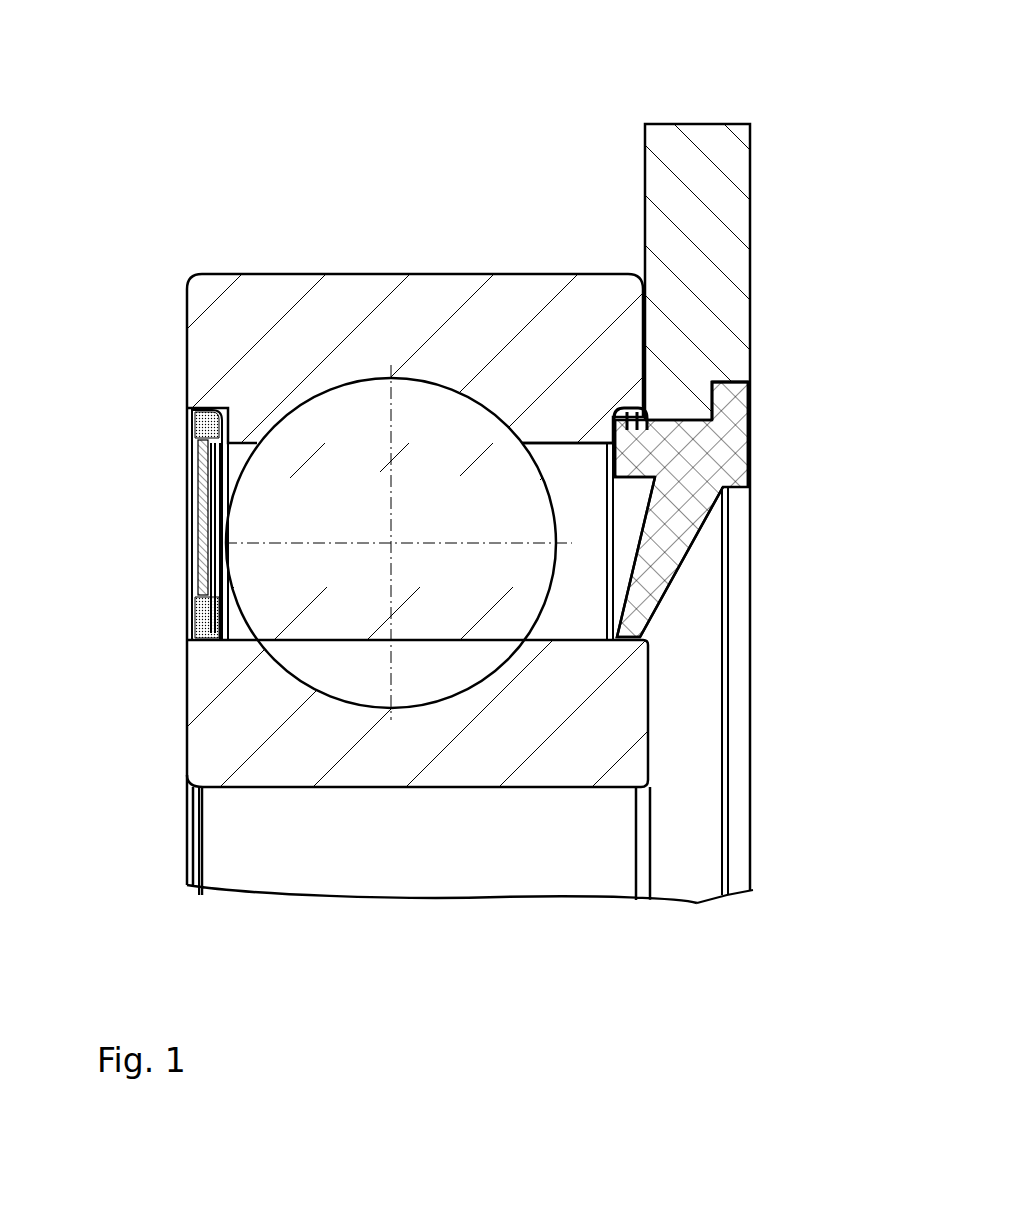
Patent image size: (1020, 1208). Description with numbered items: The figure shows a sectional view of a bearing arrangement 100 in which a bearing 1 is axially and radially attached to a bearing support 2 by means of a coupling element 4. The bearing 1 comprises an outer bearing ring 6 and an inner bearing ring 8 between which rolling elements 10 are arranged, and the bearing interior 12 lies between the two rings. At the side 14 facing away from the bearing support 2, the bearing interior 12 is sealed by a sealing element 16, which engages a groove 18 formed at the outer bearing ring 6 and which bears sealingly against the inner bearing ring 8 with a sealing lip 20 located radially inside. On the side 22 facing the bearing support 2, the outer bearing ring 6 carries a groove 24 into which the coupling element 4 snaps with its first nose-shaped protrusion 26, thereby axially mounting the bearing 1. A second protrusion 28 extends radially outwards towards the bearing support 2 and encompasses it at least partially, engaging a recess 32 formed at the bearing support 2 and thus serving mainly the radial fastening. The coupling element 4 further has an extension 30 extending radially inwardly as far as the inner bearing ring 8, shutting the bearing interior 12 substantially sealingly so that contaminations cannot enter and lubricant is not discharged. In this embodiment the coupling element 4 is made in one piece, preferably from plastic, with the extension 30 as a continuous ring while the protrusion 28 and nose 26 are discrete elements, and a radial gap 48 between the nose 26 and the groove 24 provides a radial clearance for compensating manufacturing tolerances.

The bearing arrangement 100 is at (402, 36).
The bearing 1 is at (504, 224).
The bearing support 2 is at (692, 145).
The coupling element 4 is at (723, 468).
The outer bearing ring 6 is at (380, 290).
The inner bearing ring 8 is at (395, 770).
The rolling elements 10 is at (298, 628).
The bearing interior 12 is at (586, 492).
The side facing away from the bearing support 14 is at (67, 355).
The sealing element 16 is at (207, 528).
The groove 18 is at (207, 408).
The sealing lip 20 is at (203, 630).
The side facing the bearing support 22 is at (820, 318).
The groove 24 is at (652, 383).
The first nose-shaped protrusion 26 is at (613, 423).
The second protrusion 28 is at (735, 412).
The extension 30 is at (655, 575).
The recess 32 is at (731, 377).
The radial gap 48 is at (624, 412).